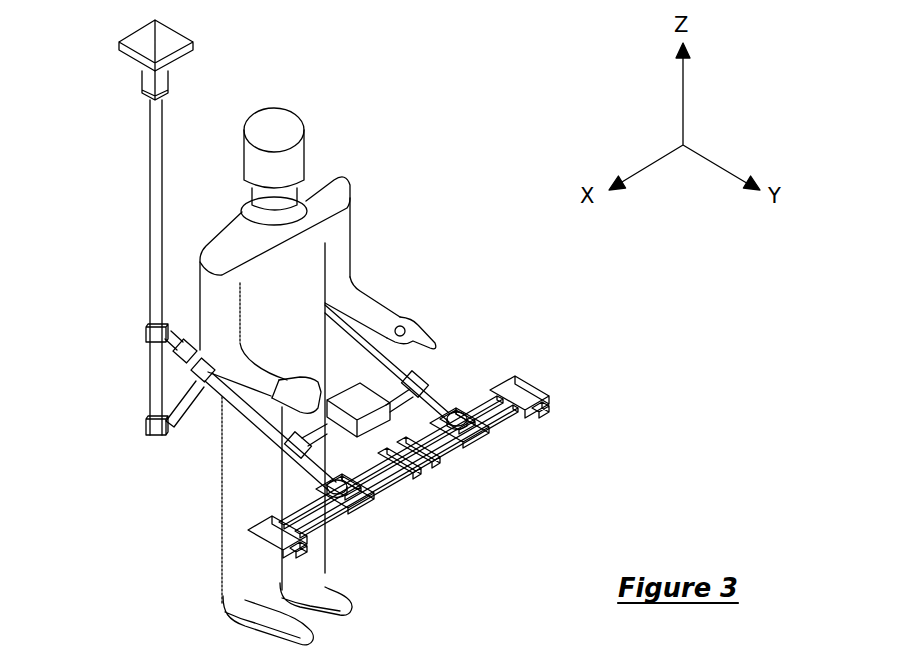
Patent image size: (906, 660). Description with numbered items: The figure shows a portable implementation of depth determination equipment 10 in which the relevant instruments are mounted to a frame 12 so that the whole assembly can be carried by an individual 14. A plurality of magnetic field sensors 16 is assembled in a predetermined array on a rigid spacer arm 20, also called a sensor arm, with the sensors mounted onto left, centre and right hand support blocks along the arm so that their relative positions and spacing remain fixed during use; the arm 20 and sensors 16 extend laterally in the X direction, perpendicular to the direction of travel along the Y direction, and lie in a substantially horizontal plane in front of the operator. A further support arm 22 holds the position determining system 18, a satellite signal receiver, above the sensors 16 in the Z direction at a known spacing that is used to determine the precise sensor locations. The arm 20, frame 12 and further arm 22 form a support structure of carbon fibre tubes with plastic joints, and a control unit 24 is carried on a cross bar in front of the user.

The equipment 10 is at (419, 155).
The frame 12 is at (440, 410).
The individual 14 is at (337, 230).
The magnetic field sensors 16 is at (520, 390).
The position determining system 18 is at (145, 80).
The spacer arm 20 is at (290, 503).
The further support arm 22 is at (155, 283).
The control unit 24 is at (353, 402).